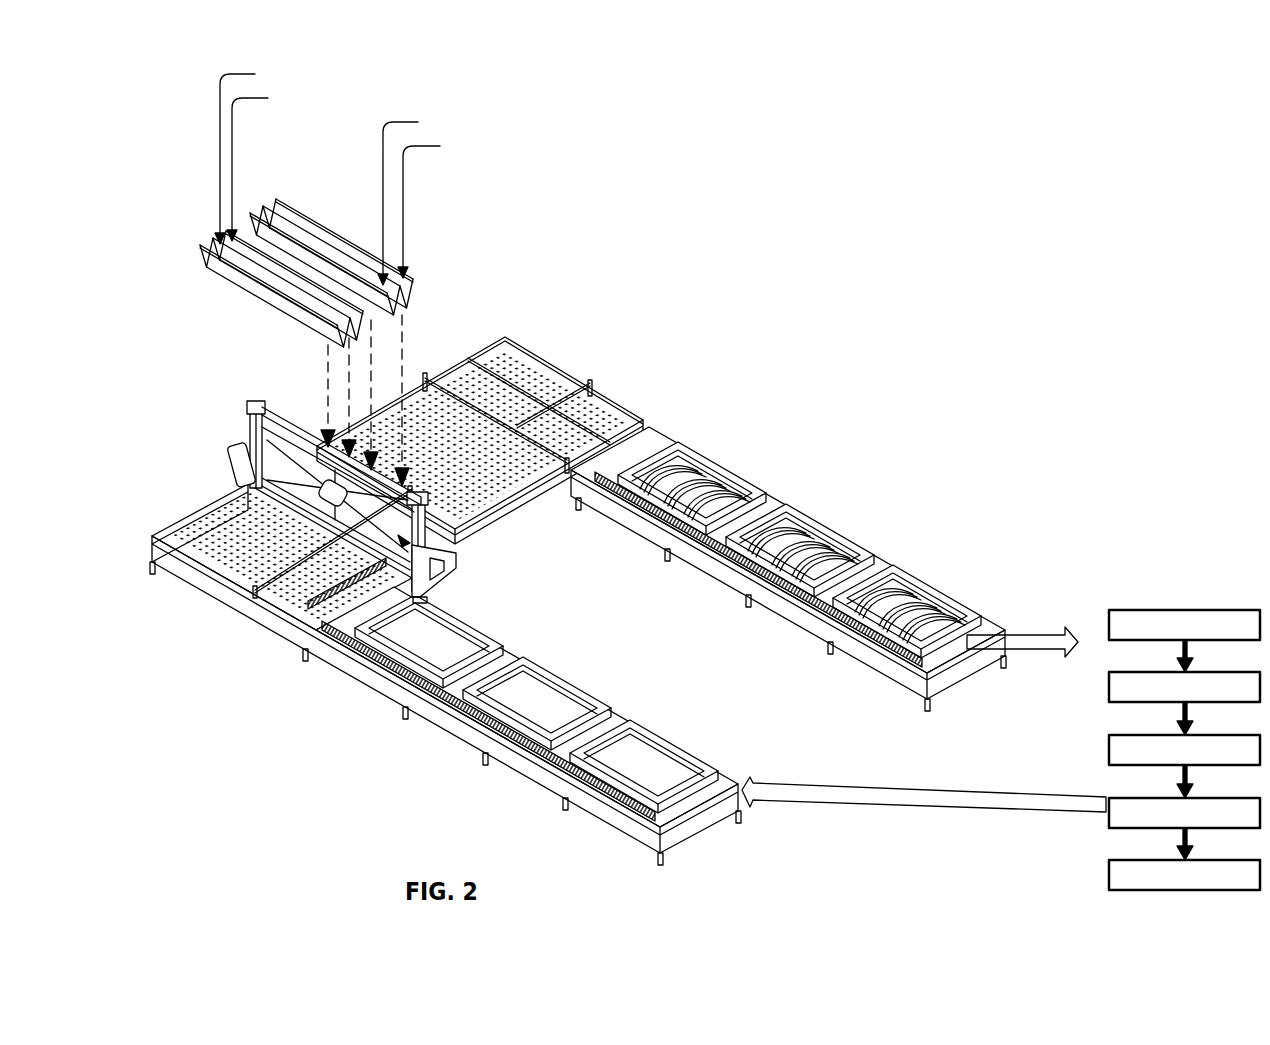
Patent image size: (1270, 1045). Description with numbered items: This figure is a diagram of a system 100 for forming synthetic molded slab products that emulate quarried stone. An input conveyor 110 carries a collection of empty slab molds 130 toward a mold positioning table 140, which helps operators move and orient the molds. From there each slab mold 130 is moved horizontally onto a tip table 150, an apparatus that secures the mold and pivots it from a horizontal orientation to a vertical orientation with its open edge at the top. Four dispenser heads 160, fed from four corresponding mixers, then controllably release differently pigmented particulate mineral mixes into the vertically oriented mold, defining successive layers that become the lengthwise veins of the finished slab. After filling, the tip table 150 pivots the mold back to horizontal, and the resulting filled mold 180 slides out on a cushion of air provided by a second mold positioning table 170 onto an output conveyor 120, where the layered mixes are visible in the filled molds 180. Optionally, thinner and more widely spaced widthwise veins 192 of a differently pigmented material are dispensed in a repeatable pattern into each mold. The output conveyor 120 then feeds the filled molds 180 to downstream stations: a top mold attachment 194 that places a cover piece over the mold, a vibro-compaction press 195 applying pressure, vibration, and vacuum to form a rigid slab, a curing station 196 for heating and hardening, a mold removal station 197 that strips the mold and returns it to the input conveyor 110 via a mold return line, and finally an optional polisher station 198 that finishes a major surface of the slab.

The system 100 is at (703, 479).
The input conveyor 110 is at (727, 770).
The output conveyor 120 is at (992, 630).
The slab molds 130 is at (496, 628).
The mold positioning table 140 is at (283, 595).
The tip table 150 is at (474, 552).
The dispenser heads 160 is at (207, 230).
The mold positioning table 170 is at (537, 505).
The filled molds 180 is at (752, 481).
The widthwise veins 192 is at (685, 462).
The top mold attachment 194 is at (1108, 626).
The vibro-compaction press 195 is at (1108, 688).
The curing station 196 is at (1108, 751).
The mold removal station 197 is at (1108, 817).
The polisher station 198 is at (1108, 886).